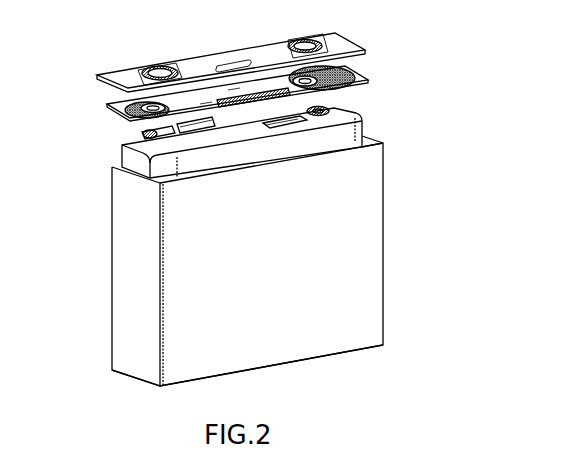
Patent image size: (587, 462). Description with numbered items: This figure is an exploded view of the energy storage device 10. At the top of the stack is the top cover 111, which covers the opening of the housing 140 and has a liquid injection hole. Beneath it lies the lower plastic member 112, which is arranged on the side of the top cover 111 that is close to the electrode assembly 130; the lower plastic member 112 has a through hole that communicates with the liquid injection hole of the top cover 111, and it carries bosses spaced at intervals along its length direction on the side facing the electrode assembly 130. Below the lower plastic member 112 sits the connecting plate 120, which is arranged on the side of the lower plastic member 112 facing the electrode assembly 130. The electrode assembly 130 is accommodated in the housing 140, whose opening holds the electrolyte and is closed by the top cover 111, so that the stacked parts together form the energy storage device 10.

The energy storage device 10 is at (97, 17).
The top cover 111 is at (373, 47).
The lower plastic member 112 is at (360, 92).
The connecting plate 120 is at (365, 135).
The electrode assembly 130 is at (292, 155).
The housing 140 is at (293, 343).